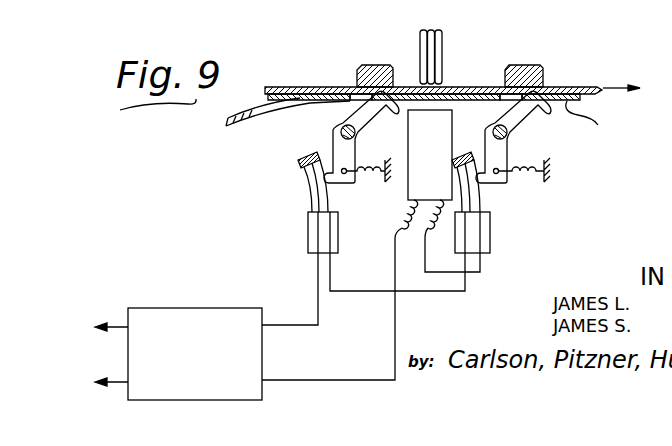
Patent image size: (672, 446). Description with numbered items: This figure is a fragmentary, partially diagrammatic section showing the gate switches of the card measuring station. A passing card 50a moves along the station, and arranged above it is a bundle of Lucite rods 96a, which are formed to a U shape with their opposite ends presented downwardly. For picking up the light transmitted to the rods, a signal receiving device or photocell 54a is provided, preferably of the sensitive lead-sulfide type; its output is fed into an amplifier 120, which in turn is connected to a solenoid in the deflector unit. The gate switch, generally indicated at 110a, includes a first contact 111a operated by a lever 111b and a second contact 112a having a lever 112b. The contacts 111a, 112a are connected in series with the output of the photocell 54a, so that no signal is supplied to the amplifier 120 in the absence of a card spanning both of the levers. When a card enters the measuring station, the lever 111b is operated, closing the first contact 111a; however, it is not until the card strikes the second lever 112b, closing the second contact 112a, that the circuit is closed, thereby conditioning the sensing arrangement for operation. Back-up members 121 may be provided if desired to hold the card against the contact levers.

The passing card 50a is at (576, 87).
The back-up members 121 is at (373, 65).
The bundle of Lucite rods 96a is at (442, 46).
The gate switch 110a is at (318, 138).
The photocell 54a is at (408, 190).
The first contact 111a is at (308, 178).
The second contact 112a is at (481, 181).
The lever 111b is at (350, 121).
The lever 112b is at (522, 113).
The amplifier 120 is at (198, 308).